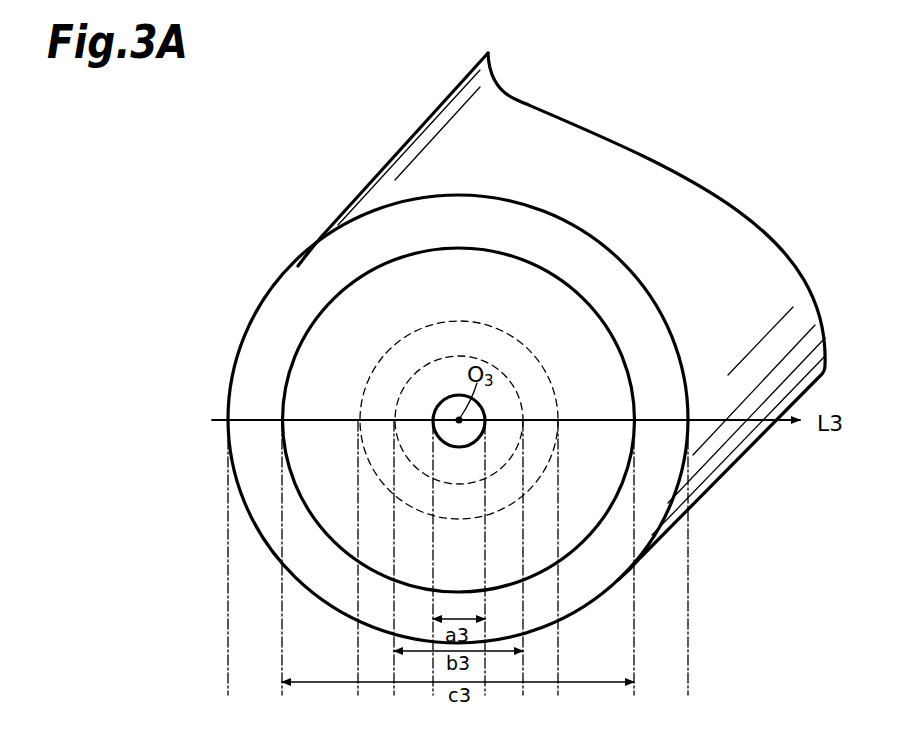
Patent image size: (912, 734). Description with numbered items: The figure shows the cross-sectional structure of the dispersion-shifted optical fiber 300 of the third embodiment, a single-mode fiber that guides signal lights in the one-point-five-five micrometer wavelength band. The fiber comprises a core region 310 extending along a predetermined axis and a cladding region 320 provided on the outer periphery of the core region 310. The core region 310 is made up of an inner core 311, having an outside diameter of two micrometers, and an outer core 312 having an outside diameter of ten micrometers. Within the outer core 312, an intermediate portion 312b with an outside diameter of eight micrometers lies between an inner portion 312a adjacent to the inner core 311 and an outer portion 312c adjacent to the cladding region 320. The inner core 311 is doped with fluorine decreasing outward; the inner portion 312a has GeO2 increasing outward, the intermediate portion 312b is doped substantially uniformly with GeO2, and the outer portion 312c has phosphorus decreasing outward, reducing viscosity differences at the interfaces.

The dispersion-shifted optical fiber 300 is at (705, 206).
The core region 310 is at (100, 243).
The inner core 311 is at (293, 344).
The outer core 312 is at (168, 360).
The inner portion 312a is at (347, 381).
The intermediate portion 312b is at (365, 412).
The outer portion 312c is at (403, 420).
The cladding region 320 is at (592, 582).